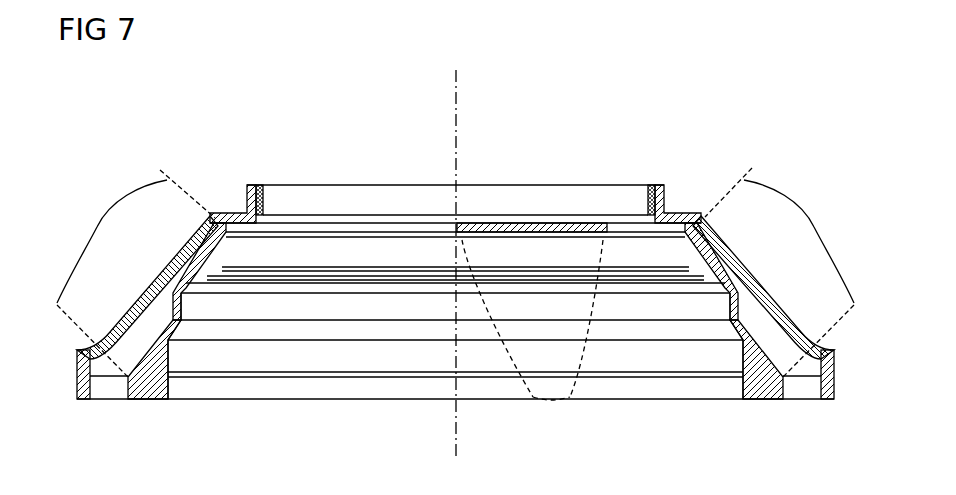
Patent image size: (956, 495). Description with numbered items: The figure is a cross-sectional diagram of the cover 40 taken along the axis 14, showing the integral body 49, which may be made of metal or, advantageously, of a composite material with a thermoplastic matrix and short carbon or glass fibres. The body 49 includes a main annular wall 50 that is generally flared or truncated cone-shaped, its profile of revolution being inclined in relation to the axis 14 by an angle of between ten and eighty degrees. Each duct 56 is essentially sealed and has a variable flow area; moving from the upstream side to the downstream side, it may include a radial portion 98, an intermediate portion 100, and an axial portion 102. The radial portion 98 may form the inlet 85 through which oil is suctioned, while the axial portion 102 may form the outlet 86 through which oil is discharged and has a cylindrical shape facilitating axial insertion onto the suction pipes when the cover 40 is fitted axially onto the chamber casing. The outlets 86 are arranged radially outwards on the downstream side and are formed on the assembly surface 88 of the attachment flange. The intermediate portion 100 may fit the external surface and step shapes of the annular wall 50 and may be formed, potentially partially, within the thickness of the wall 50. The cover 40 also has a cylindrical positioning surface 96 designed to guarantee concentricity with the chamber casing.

The axis 14 is at (456, 113).
The cover 40 is at (134, 159).
The integral body 49 is at (731, 128).
The main annular wall 50 is at (182, 310).
The duct 56 is at (153, 333).
The inlet 85 is at (263, 225).
The outlet 86 is at (95, 399).
The assembly surface 88 is at (150, 384).
The cylindrical positioning surface 96 is at (740, 385).
The radial portion 98 is at (214, 214).
The intermediate portion 100 is at (455, 272).
The axial portion 102 is at (118, 388).